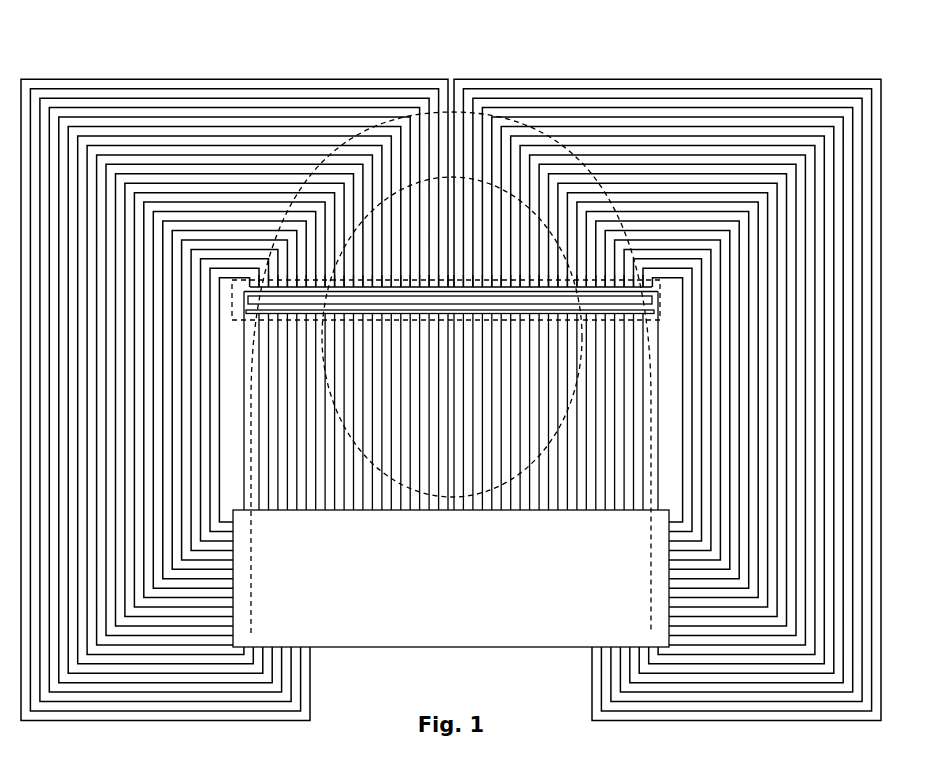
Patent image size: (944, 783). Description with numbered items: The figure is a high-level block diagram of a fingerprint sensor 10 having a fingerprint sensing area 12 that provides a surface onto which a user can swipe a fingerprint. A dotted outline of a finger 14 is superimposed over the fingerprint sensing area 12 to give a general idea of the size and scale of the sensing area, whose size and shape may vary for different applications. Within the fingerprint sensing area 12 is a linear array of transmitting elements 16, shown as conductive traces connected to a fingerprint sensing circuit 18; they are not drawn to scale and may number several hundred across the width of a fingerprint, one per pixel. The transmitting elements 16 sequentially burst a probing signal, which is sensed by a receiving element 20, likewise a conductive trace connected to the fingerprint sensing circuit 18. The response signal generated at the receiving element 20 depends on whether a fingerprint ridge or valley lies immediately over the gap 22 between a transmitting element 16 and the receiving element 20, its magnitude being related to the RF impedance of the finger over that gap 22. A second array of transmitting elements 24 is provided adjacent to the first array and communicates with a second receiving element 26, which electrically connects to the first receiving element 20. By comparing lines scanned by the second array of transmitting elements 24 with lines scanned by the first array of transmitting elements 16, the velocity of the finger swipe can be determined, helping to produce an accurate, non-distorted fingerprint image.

The fingerprint sensor 10 is at (127, 60).
The fingerprint sensing area 12 is at (232, 321).
The finger 14 is at (486, 113).
The transmitting elements 16 is at (615, 320).
The fingerprint sensing circuit 18 is at (631, 637).
The receiving element 20 is at (632, 317).
The gap 22 is at (655, 312).
The second array of transmitting elements 24 is at (615, 281).
The second receiving element 26 is at (633, 287).